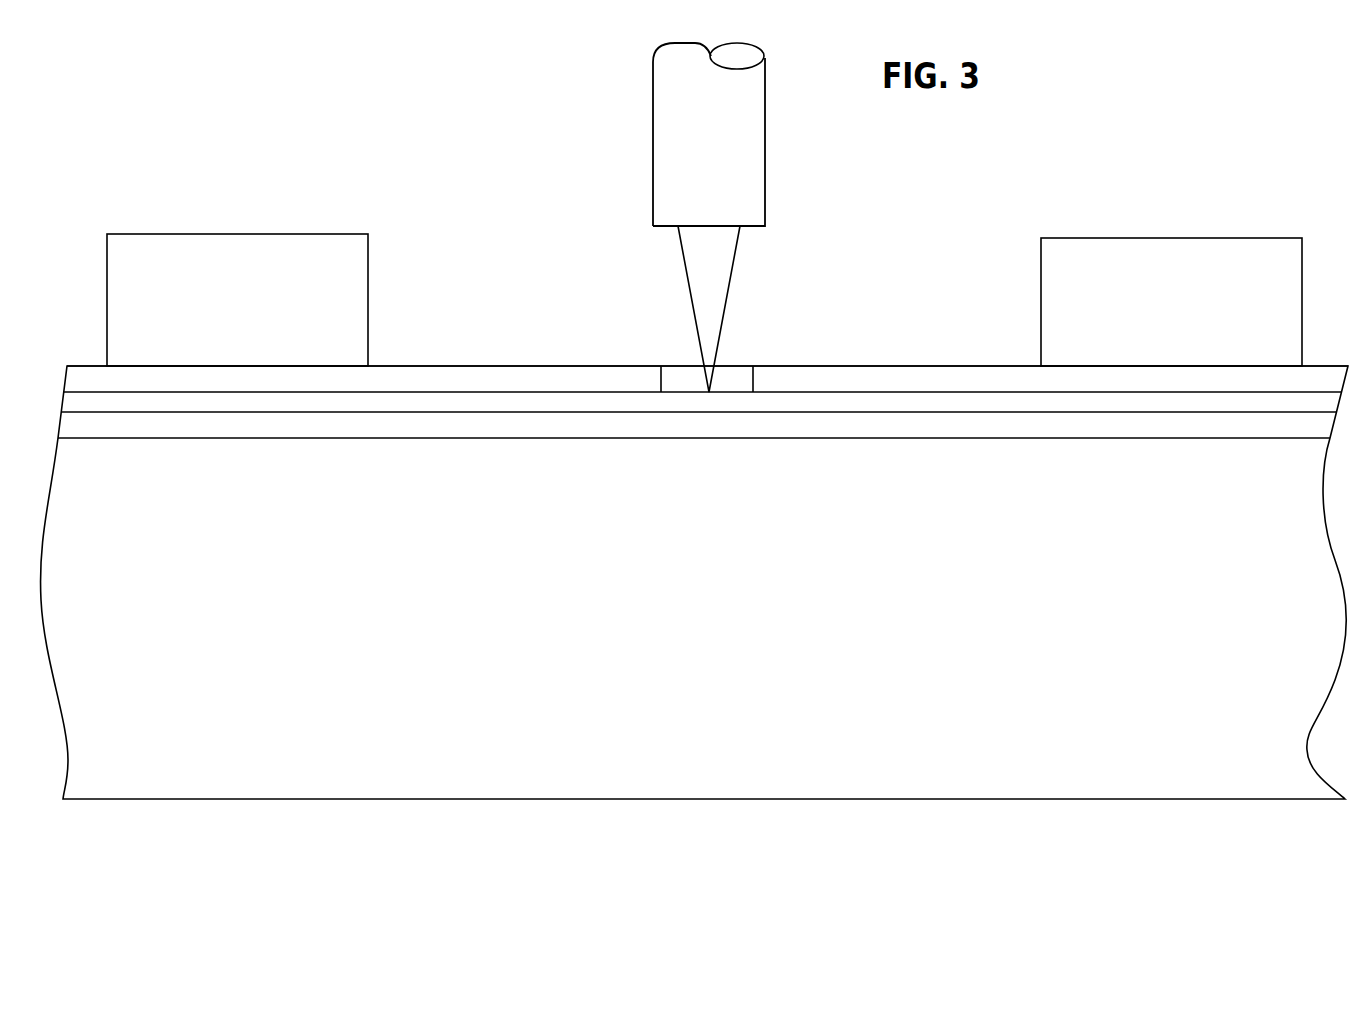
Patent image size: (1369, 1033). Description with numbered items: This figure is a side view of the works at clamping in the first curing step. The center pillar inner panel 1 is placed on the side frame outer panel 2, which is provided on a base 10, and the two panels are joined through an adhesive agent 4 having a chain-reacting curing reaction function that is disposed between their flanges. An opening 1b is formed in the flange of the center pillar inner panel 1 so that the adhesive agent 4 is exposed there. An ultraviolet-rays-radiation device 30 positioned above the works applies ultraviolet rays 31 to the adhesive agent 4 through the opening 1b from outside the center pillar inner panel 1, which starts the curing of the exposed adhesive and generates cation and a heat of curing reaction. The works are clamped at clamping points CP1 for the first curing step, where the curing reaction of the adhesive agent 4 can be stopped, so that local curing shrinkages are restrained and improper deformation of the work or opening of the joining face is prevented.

The base 10 is at (770, 799).
The center pillar inner panel 1 is at (887, 379).
The side frame outer panel 2 is at (888, 428).
The adhesive agent 4 is at (456, 404).
The opening 1b is at (664, 376).
The ultraviolet-rays-radiation device 30 is at (765, 175).
The ultraviolet rays 31 is at (725, 310).
The clamping point CP1 is at (238, 234).